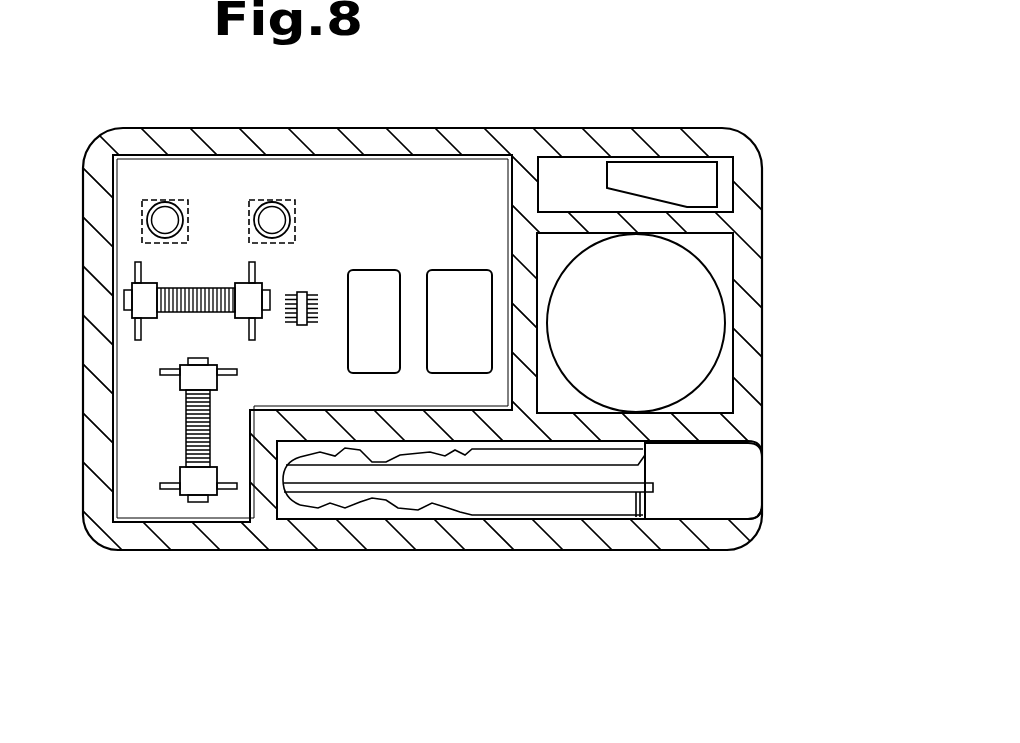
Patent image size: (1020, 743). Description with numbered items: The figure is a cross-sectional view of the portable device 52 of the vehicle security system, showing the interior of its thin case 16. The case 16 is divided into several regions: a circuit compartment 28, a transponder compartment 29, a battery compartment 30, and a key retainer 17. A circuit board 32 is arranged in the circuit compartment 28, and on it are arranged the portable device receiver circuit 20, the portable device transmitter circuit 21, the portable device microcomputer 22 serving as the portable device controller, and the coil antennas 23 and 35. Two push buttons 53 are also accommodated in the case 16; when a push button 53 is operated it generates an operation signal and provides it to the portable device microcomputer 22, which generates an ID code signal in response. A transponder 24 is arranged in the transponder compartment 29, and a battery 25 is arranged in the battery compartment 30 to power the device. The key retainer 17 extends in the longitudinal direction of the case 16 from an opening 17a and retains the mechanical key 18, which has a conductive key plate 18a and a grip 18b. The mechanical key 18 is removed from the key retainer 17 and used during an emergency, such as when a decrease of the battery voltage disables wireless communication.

The portable device 52 is at (758, 124).
The case 16 is at (640, 137).
The transponder compartment 29 is at (560, 163).
The transponder 24 is at (705, 182).
The battery compartment 30 is at (729, 375).
The battery 25 is at (715, 327).
The key retainer 17 is at (383, 517).
The opening 17a is at (748, 514).
The mechanical key 18 is at (496, 545).
The conductive key plate 18a is at (594, 506).
The grip 18b is at (573, 593).
The push buttons 53 is at (252, 220).
The coil antenna 23 is at (170, 317).
The coil antenna 35 is at (186, 428).
The portable device microcomputer 22 is at (301, 325).
The portable device receiver circuit 20 is at (362, 275).
The portable device transmitter circuit 21 is at (450, 276).
The circuit compartment 28 is at (143, 519).
The circuit board 32 is at (235, 510).